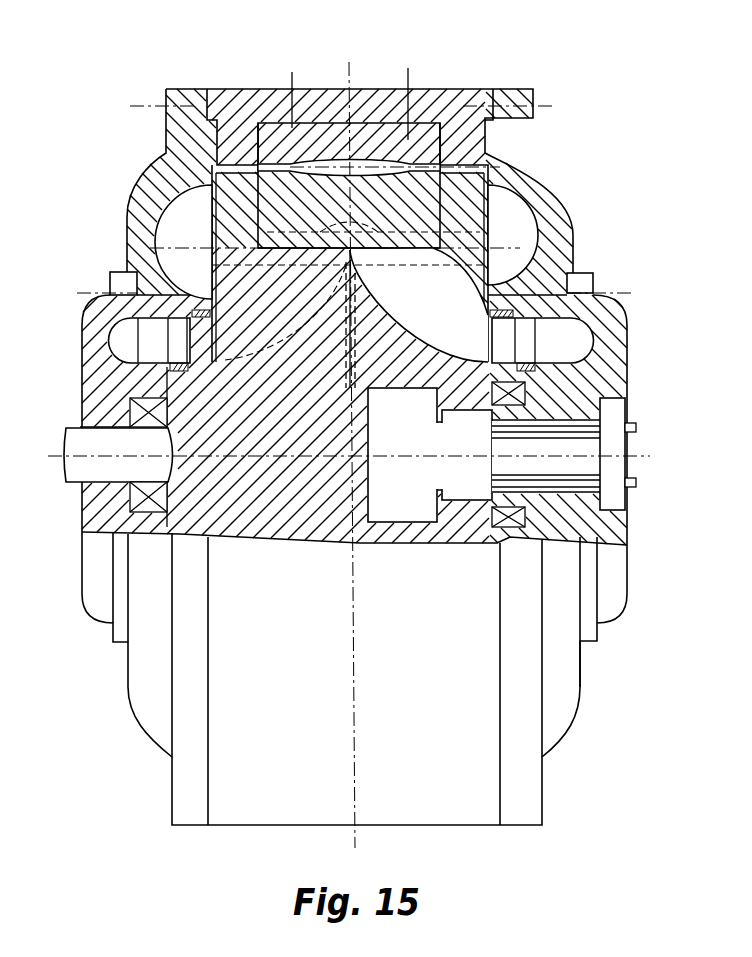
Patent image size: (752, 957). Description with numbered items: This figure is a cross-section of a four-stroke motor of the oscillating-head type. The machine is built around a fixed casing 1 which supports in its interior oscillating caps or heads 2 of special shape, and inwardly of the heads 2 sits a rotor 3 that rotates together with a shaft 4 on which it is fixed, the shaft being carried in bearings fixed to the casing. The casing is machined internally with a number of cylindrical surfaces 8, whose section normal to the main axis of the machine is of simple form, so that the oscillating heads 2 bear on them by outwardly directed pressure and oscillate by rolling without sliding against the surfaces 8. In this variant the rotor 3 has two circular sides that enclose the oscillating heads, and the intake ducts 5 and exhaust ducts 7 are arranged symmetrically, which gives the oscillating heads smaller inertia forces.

The fixed casing 1 is at (268, 813).
The oscillating heads 2 is at (272, 177).
The rotor 3 is at (192, 524).
The shaft 4 is at (78, 434).
The intake ducts 5 is at (137, 270).
The exhaust ducts 7 is at (221, 239).
The cylindrical surfaces 8 is at (369, 129).